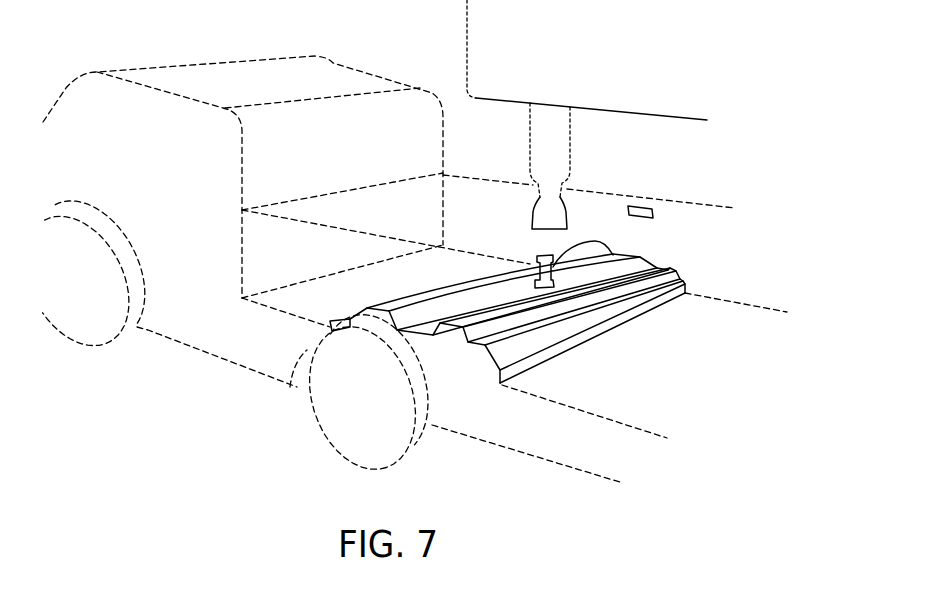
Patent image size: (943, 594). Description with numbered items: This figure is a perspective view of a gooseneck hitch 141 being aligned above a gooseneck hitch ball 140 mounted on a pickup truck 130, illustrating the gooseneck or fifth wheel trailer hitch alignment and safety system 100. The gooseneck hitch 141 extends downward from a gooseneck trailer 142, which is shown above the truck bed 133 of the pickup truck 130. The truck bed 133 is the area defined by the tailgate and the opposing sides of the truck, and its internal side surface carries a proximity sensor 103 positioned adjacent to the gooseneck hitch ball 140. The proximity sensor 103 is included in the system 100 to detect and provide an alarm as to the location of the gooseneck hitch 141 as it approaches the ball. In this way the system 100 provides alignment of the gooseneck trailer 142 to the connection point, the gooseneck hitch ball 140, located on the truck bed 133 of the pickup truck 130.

The gooseneck or fifth wheel trailer hitch alignment and safety system 100 is at (744, 148).
The proximity sensor 103 is at (643, 204).
The pickup truck 130 is at (472, 179).
The truck bed 133 is at (738, 325).
The gooseneck hitch ball 140 is at (598, 240).
The gooseneck hitch 141 is at (568, 224).
The gooseneck trailer 142 is at (467, 44).